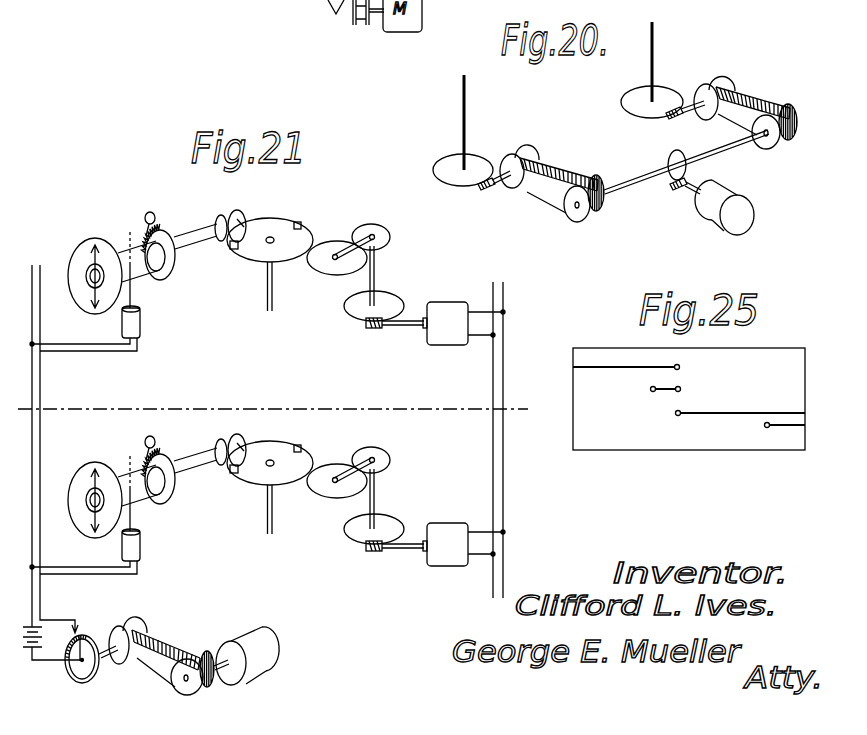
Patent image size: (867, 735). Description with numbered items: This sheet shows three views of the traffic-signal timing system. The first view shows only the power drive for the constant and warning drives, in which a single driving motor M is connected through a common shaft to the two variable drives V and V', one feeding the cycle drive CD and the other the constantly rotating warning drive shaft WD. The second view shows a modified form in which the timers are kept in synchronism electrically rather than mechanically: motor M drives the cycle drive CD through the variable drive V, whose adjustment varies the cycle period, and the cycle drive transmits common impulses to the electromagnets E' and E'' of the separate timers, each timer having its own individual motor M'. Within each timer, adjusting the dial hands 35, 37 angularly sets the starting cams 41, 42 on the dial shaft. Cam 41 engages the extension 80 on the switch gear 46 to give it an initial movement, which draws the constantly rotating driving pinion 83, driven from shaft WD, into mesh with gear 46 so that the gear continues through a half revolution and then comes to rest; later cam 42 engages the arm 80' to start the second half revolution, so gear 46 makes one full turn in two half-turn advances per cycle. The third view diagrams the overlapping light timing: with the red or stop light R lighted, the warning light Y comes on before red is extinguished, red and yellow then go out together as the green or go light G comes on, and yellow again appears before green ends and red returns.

In FIG. 21, the dial hand 37 is at (82, 250).
In FIG. 21, the dial hand 35 is at (92, 307).
In FIG. 21, the electromagnet E' is at (144, 285).
In FIG. 21, the electromagnet E'' is at (149, 508).
In FIG. 21, the cam element 42 is at (222, 215).
In FIG. 21, the cam element 41 is at (242, 213).
In FIG. 21, the switch gear 46 is at (273, 220).
In FIG. 21, the extension lug 80 is at (219, 263).
In FIG. 21, the arm 80' is at (330, 239).
In FIG. 21, the driving pinion 83 is at (366, 237).
In FIG. 20, the warning drive shaft WD is at (657, 32).
In FIG. 21, the warning drive shaft WD is at (376, 404).
In FIG. 20, the cycle drive CD is at (467, 99).
In FIG. 21, the cycle drive CD is at (68, 665).
In FIG. 20, the variable drive V is at (541, 183).
In FIG. 21, the variable drive V is at (156, 656).
In FIG. 20, the variable drive V' is at (731, 112).
In FIG. 20, the driving motor M is at (712, 206).
In FIG. 21, the driving motor M is at (246, 656).
In FIG. 21, the individual motor M' is at (435, 434).
In FIG. 25, the red lamp R is at (626, 359).
In FIG. 25, the yellow lamp Y is at (728, 409).
In FIG. 25, the green lamp G is at (741, 405).